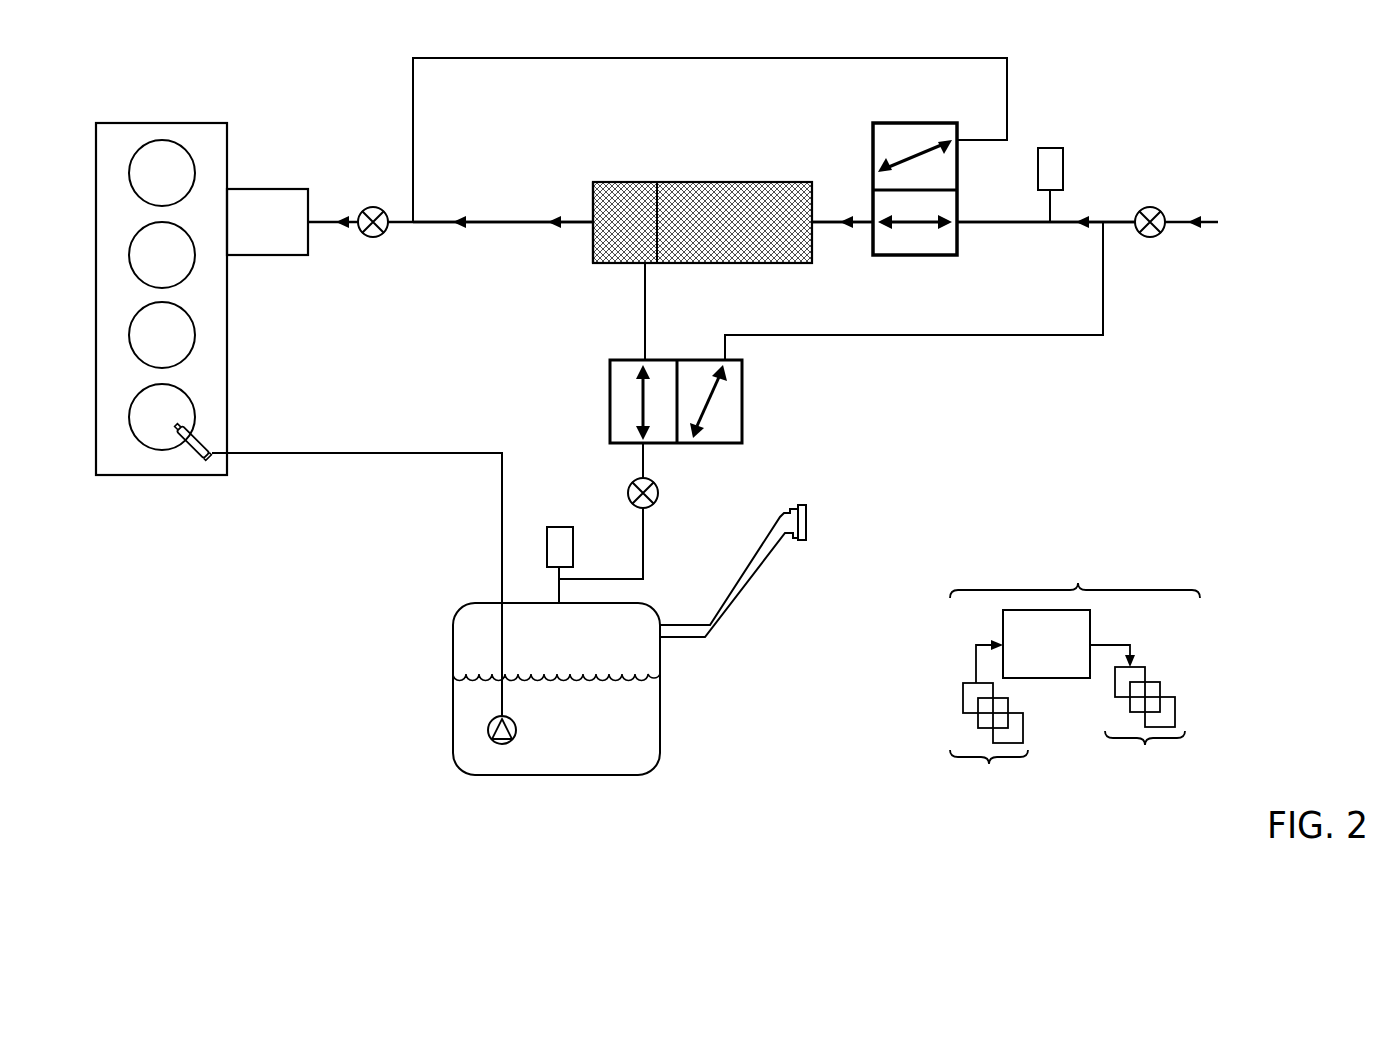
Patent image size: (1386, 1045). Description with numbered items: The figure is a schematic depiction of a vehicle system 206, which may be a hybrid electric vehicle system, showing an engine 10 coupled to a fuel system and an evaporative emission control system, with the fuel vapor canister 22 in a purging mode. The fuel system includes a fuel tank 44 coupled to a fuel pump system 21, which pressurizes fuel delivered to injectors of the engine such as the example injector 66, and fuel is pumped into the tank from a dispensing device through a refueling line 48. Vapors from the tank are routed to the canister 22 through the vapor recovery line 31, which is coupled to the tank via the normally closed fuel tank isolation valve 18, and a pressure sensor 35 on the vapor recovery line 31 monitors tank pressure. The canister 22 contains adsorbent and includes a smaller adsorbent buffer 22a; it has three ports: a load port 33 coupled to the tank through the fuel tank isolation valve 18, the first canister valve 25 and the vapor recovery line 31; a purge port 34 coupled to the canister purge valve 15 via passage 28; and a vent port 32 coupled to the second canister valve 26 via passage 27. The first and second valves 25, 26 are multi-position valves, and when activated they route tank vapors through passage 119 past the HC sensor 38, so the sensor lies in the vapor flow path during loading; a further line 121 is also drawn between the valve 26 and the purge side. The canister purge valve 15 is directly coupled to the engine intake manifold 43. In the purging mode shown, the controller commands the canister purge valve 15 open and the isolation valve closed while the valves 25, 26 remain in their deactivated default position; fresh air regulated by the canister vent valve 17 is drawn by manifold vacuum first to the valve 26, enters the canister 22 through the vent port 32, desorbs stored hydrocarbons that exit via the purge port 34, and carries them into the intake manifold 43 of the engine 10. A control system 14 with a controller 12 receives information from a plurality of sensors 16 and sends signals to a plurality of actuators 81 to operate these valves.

The engine 10 is at (210, 122).
The engine intake manifold 43 is at (275, 189).
The canister purge valve 15 is at (378, 208).
The passage 28 is at (487, 221).
The bypass passage 121 is at (713, 58).
The fuel vapor canister 22 is at (730, 181).
The buffer 22a is at (615, 181).
The purge port 34 is at (592, 214).
The vent port 32 is at (815, 224).
The load port 33 is at (646, 268).
The second canister valve 26 is at (913, 123).
The HC sensor 38 is at (1042, 148).
The canister vent valve 17 is at (1153, 208).
The passage 27 is at (990, 224).
The passage 119 is at (888, 334).
The first canister valve 25 is at (623, 358).
The injector 66 is at (198, 438).
The fuel tank isolation valve 18 is at (660, 492).
The vapor recovery line 31 is at (647, 550).
The pressure sensor 35 is at (559, 527).
The fuel tank 44 is at (660, 745).
The fuel pump system 21 is at (516, 729).
The refueling line 48 is at (723, 608).
The vehicle system 206 is at (268, 591).
The control system 14 is at (1075, 672).
The controller 12 is at (1046, 644).
The sensors 16 is at (989, 722).
The actuators 81 is at (1137, 716).